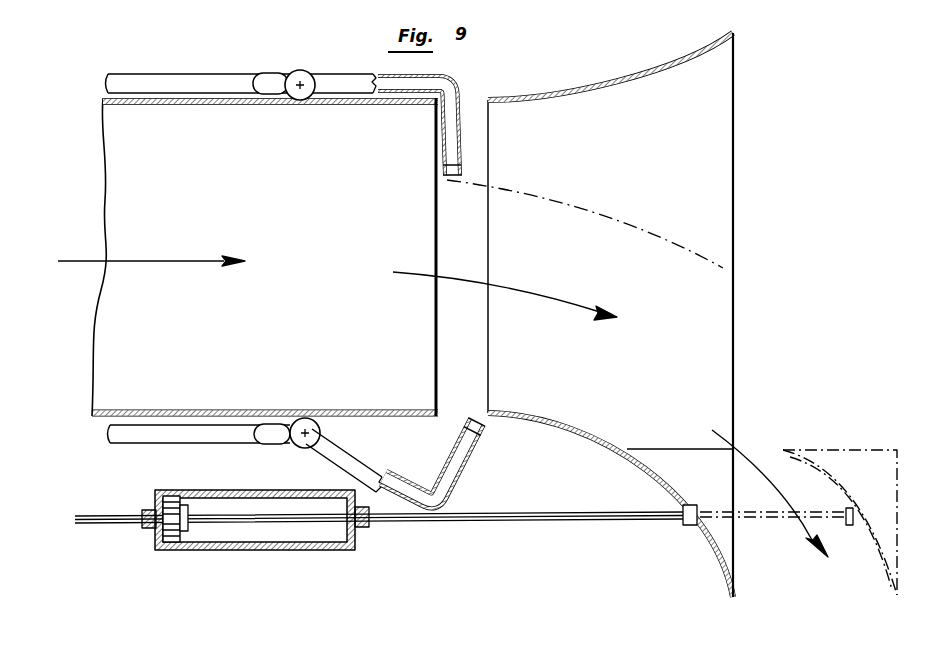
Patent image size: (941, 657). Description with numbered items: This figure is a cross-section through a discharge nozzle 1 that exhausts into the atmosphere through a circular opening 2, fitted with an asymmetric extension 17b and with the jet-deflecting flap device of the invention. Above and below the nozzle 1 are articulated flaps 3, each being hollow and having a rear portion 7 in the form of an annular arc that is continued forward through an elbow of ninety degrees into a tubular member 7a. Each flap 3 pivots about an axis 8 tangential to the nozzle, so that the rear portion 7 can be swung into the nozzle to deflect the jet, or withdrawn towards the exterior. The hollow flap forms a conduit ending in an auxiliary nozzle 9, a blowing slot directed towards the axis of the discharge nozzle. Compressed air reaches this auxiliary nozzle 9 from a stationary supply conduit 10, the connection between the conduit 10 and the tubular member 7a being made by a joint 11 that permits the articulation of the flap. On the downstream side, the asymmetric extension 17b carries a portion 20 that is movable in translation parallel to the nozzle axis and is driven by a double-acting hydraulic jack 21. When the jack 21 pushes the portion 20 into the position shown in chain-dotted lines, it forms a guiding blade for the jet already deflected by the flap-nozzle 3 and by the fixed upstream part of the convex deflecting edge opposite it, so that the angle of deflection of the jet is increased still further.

The nozzle 1 is at (414, 418).
The circular opening 2 is at (437, 342).
The articulated flap 3 is at (451, 279).
The rear portion 7 is at (462, 140).
The tubular member 7a is at (390, 83).
The pivot axis 8 is at (300, 85).
The auxiliary nozzle 9 is at (447, 165).
The supply conduit 10 is at (148, 78).
The rotating joint 11 is at (308, 74).
The asymmetric extension 17b is at (575, 92).
The movable portion 20 is at (717, 555).
The double-acting hydraulic jack 21 is at (245, 550).